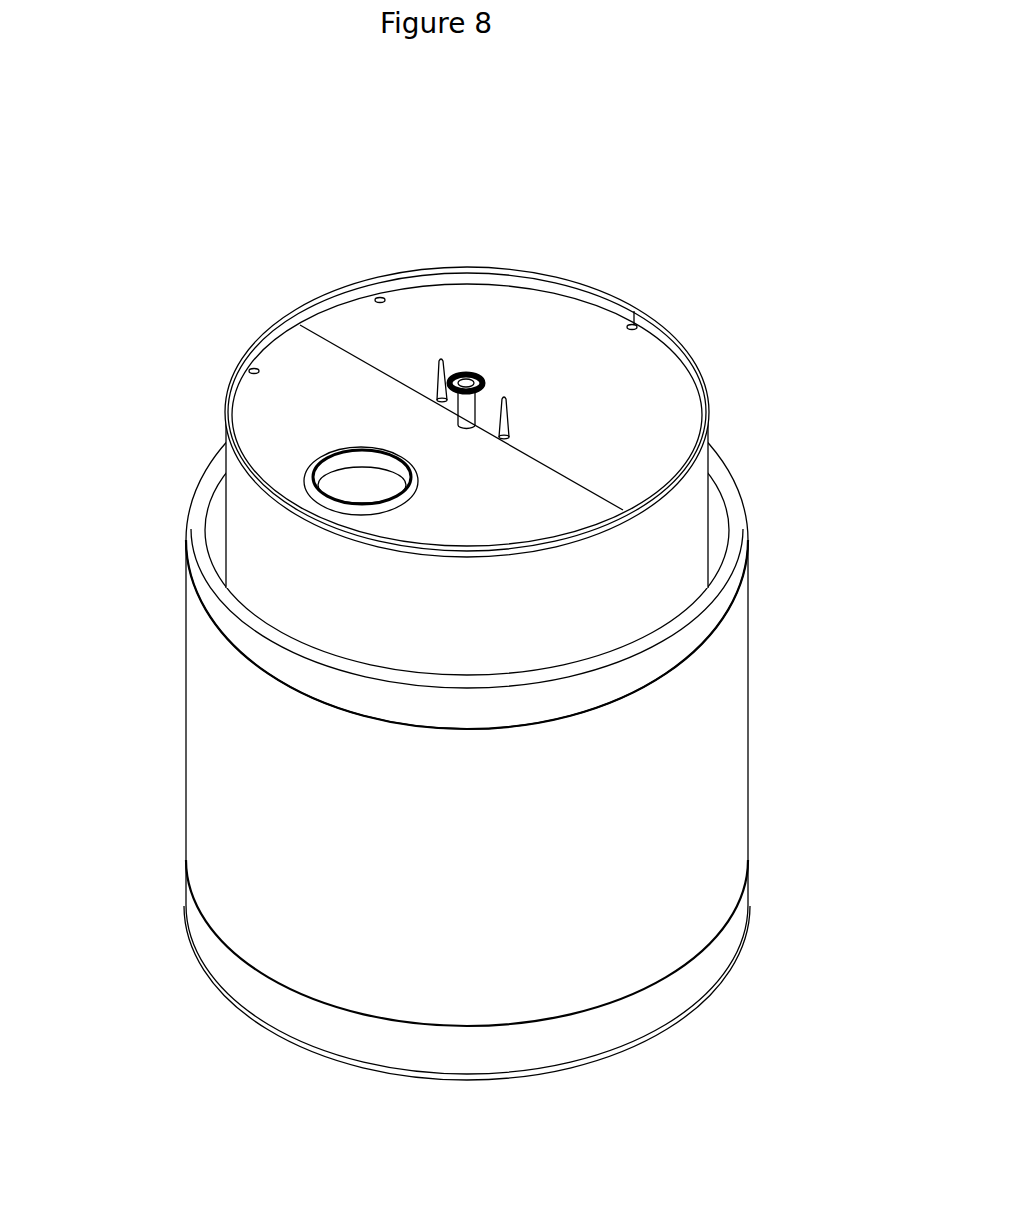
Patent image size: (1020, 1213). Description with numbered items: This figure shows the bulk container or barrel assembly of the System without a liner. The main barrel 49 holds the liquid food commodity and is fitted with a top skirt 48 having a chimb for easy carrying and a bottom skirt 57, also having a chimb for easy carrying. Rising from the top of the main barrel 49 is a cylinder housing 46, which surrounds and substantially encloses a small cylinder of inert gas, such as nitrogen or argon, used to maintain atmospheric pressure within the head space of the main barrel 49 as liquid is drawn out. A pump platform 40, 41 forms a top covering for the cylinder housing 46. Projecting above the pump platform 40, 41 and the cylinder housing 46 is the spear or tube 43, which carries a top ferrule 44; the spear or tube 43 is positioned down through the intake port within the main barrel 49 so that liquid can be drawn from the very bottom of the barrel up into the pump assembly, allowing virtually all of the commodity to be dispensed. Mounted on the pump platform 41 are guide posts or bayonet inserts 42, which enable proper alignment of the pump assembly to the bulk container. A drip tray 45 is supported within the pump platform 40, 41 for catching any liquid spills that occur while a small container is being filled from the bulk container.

The pump platform 40 is at (295, 382).
The pump platform 41 is at (385, 333).
The guide posts or bayonet inserts 42 is at (443, 355).
The spear or tube 43 is at (481, 397).
The top ferrule 44 is at (483, 373).
The drip tray 45 is at (345, 460).
The cylinder housing 46 is at (252, 531).
The top skirt 48 is at (230, 631).
The main barrel 49 is at (240, 866).
The bottom skirt 57 is at (232, 970).